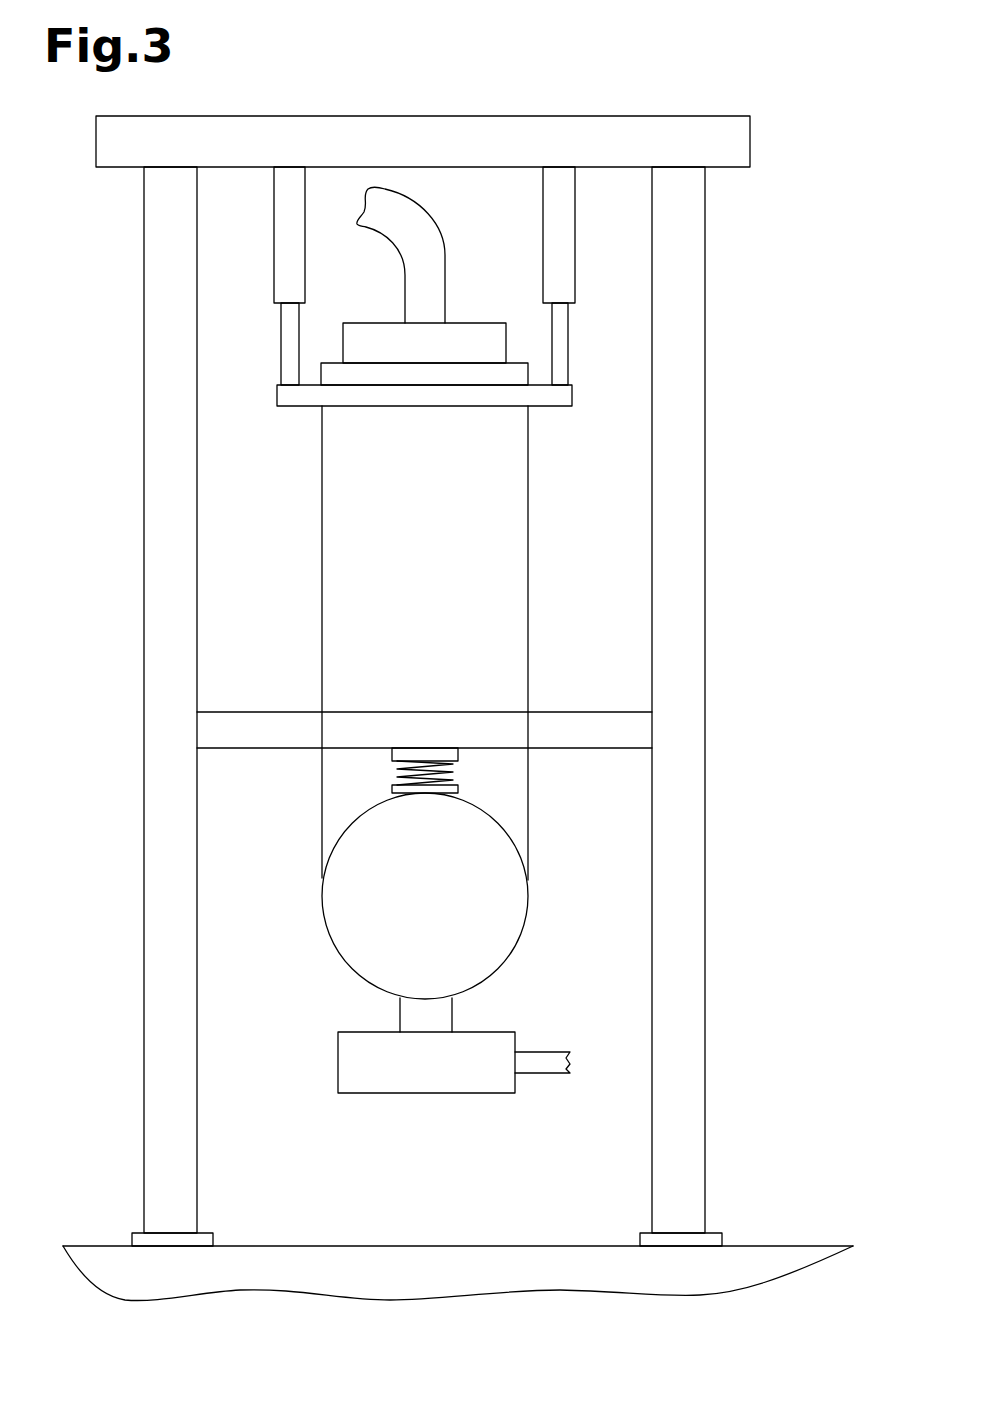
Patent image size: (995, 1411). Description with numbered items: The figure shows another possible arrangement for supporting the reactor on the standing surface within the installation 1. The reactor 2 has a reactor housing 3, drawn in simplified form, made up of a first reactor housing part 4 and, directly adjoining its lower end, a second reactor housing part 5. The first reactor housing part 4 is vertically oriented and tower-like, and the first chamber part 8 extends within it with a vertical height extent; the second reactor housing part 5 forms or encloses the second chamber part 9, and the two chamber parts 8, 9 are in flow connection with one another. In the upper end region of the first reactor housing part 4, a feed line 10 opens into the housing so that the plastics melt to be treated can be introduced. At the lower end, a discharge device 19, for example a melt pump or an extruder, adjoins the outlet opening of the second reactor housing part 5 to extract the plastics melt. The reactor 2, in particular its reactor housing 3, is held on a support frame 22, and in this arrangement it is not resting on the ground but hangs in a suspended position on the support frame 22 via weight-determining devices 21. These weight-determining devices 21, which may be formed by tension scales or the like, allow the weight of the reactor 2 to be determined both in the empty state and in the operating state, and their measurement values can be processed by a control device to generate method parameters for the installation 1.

The installation 1 is at (805, 101).
The reactor 2 is at (559, 643).
The reactor housing 3 is at (550, 552).
The first reactor housing part 4 is at (496, 617).
The second reactor housing part 5 is at (365, 926).
The first chamber part 8 is at (360, 535).
The second chamber part 9 is at (475, 908).
The feed line 10 is at (400, 218).
The discharge device 19 is at (314, 1080).
The weight-determining device 21 is at (286, 244).
The support frame 22 is at (673, 398).